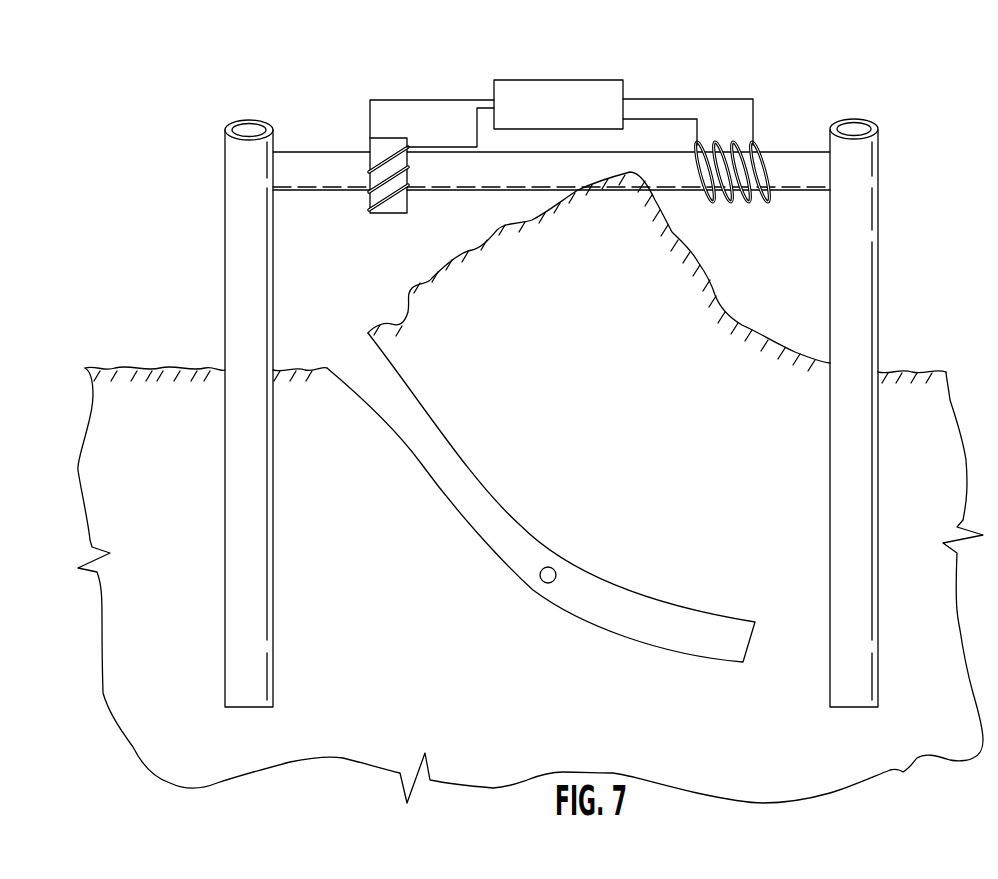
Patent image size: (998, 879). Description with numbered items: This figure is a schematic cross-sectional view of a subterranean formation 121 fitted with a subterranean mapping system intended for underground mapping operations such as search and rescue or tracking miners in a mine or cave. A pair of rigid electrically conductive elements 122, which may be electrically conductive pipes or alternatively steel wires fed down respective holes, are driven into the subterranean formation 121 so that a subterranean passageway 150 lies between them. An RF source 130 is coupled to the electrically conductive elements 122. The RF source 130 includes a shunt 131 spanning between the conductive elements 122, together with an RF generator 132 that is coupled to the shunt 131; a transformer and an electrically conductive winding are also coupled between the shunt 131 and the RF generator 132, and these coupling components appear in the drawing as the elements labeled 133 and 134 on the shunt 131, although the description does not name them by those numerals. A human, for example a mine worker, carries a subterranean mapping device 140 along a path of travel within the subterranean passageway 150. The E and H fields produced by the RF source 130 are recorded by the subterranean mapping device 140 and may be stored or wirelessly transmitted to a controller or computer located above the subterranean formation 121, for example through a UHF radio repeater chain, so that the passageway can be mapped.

The subterranean formation 121 is at (142, 398).
The electrically conductive elements 122 is at (225, 172).
The RF source 130 is at (375, 91).
The shunt 131 is at (797, 165).
The RF generator 132 is at (624, 88).
The first coil 133 is at (367, 148).
The second coil 134 is at (758, 142).
The subterranean mapping device 140 is at (541, 577).
The subterranean passageway 150 is at (612, 627).